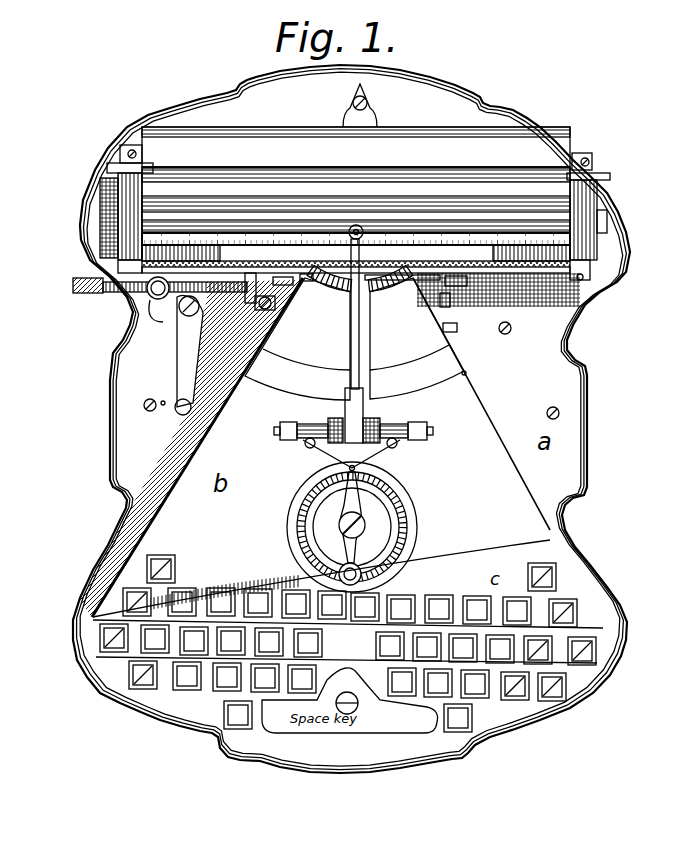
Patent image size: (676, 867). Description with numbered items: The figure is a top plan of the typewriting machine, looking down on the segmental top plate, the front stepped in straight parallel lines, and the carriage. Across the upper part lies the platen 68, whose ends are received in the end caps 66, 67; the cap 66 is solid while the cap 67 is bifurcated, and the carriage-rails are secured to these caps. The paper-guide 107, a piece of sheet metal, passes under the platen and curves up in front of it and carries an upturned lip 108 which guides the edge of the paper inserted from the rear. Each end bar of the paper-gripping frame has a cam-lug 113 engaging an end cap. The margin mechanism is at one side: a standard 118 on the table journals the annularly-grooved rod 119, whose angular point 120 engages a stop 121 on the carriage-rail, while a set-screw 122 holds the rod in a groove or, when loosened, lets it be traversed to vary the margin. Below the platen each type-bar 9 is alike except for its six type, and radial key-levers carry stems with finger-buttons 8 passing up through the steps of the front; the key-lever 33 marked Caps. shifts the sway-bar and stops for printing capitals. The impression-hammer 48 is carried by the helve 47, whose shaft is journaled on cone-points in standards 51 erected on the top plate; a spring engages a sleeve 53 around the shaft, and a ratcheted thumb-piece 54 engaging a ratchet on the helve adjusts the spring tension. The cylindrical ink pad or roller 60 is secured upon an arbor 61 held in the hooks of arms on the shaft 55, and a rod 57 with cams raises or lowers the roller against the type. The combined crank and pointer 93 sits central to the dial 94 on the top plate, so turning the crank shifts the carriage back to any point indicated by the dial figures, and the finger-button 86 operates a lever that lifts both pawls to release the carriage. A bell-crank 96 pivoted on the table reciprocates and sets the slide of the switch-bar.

The upturned lip 108 is at (356, 127).
The paper-guide 107 is at (356, 199).
The platen 68 is at (356, 200).
The cam-lug 113 is at (356, 259).
The end cap 67 is at (108, 193).
The end cap 66 is at (583, 204).
The impression-hammer 48 is at (355, 229).
The ink pad or roller 60 is at (360, 279).
The type-bar 9 is at (330, 294).
The helve 47 is at (408, 354).
The arbor 61 is at (456, 285).
The rod 57 is at (448, 303).
The shaft 55 is at (499, 328).
The stop 121 is at (100, 267).
The annularly-grooved rod 119 is at (132, 297).
The standard 118 is at (159, 296).
The set-screw 122 is at (159, 321).
The angular point 120 is at (252, 305).
The bell-crank 96 is at (189, 355).
The standard 51 is at (356, 422).
The sleeve 53 is at (352, 428).
The thumb-piece 54 is at (353, 424).
The dial 94 is at (365, 527).
The combined crank and pointer 93 is at (351, 512).
The finger-button 8 is at (348, 628).
The key-lever 33 is at (222, 713).
The finger-button 86 is at (458, 718).